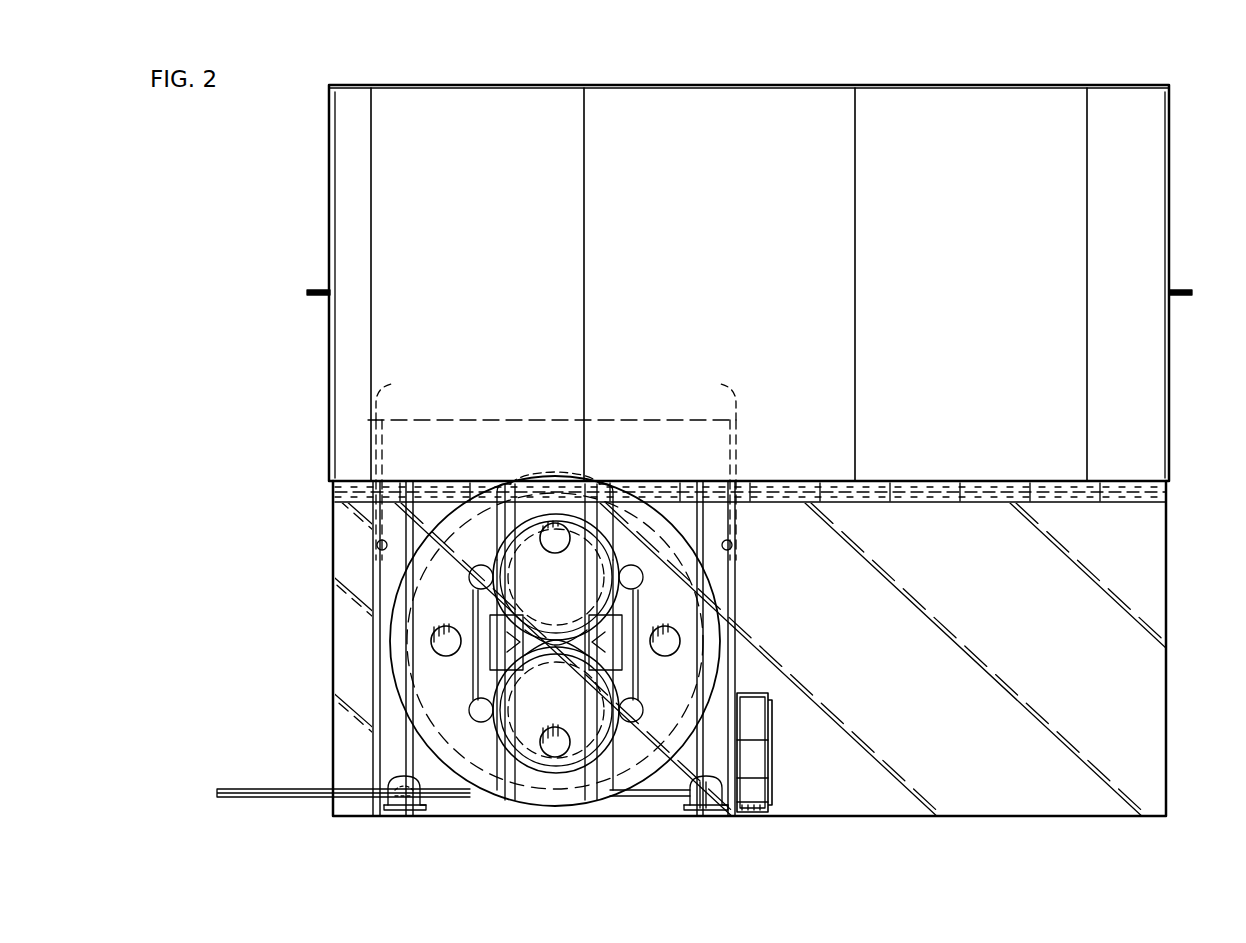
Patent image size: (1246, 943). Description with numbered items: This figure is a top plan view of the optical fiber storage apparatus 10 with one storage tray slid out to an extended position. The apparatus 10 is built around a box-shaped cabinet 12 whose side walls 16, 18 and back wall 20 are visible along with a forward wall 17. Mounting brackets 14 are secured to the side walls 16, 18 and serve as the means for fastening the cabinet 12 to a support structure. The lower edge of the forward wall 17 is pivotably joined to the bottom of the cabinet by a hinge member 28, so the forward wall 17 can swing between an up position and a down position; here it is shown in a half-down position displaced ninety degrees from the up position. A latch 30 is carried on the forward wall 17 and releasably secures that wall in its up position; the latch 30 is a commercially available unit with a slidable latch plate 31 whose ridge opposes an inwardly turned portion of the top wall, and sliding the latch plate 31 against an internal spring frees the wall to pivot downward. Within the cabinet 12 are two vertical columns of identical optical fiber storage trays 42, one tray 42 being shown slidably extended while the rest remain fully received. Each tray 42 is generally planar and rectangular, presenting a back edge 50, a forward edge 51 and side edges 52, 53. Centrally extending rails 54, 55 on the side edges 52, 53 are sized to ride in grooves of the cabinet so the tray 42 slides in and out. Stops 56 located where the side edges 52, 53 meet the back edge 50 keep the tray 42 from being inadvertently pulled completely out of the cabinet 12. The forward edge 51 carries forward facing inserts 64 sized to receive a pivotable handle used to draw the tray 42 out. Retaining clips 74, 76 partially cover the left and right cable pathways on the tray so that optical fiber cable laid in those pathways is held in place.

The apparatus 10 is at (205, 170).
The cabinet 12 is at (438, 82).
The mounting brackets 14 is at (321, 298).
The side wall 16 is at (329, 246).
The forward wall 17 is at (1150, 675).
The side wall 18 is at (1172, 185).
The back wall 20 is at (752, 84).
The hinge member 28 is at (1150, 508).
The latch 30 is at (770, 712).
The latch plate 31 is at (751, 772).
The optical fiber storage tray 42 is at (468, 410).
The back edge 50 is at (527, 420).
The forward edge 51 is at (520, 817).
The side edge 52 is at (377, 545).
The side edge 53 is at (733, 545).
The rail 54 is at (380, 624).
The rail 55 is at (736, 581).
The stops 56 is at (742, 408).
The forward facing inserts 64 is at (428, 813).
The retaining clip 74 is at (395, 803).
The retaining clip 76 is at (708, 812).